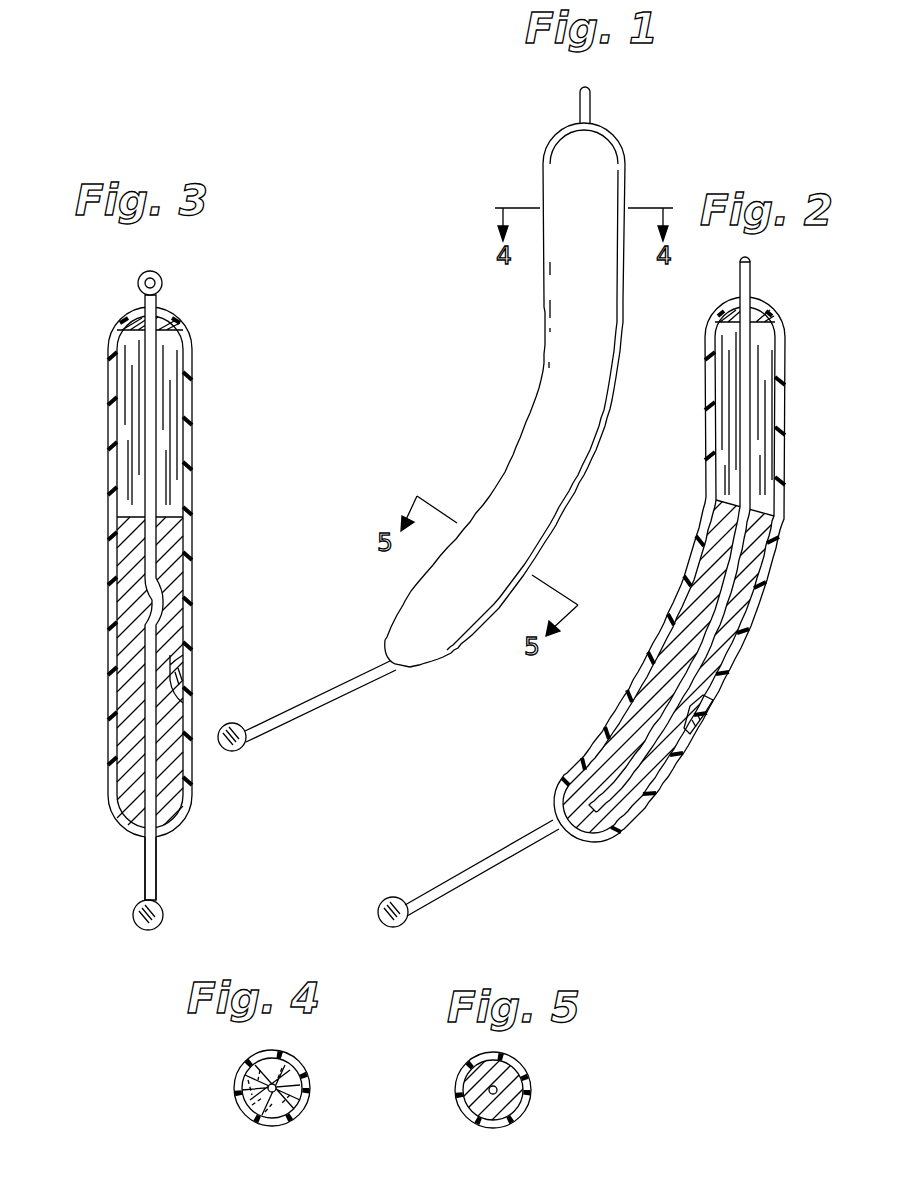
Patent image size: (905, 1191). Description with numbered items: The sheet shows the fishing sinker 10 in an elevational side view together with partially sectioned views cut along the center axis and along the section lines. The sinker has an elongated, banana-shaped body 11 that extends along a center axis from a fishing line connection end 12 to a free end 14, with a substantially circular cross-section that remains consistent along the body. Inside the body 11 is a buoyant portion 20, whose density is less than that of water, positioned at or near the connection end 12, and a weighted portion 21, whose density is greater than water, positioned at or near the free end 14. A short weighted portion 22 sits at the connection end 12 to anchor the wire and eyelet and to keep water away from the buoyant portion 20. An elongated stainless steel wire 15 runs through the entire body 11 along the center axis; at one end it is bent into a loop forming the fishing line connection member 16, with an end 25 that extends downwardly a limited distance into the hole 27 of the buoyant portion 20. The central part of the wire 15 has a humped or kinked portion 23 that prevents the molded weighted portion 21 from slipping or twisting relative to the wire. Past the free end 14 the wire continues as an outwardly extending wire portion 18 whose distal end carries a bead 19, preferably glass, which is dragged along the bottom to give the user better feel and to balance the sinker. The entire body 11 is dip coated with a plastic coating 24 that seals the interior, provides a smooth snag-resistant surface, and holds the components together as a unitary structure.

In FIG. 1, the fishing sinker 10 is at (446, 430).
In FIG. 1, the body 11 is at (588, 413).
In FIG. 1, the fishing line connection end 12 is at (603, 127).
In FIG. 3, the fishing line connection end 12 is at (128, 311).
In FIG. 2, the fishing line connection end 12 is at (770, 308).
In FIG. 1, the free end 14 is at (385, 641).
In FIG. 3, the free end 14 is at (118, 833).
In FIG. 2, the free end 14 is at (548, 812).
In FIG. 3, the wire 15 is at (158, 437).
In FIG. 2, the wire 15 is at (669, 537).
In FIG. 4, the wire 15 is at (283, 1088).
In FIG. 5, the wire 15 is at (497, 1092).
In FIG. 1, the fishing line connection member 16 is at (580, 97).
In FIG. 3, the fishing line connection member 16 is at (158, 277).
In FIG. 2, the fishing line connection member 16 is at (752, 270).
In FIG. 1, the wire portion 18 is at (340, 700).
In FIG. 3, the wire portion 18 is at (157, 876).
In FIG. 2, the wire portion 18 is at (488, 880).
In FIG. 1, the bead 19 is at (244, 745).
In FIG. 3, the bead 19 is at (134, 910).
In FIG. 2, the bead 19 is at (392, 896).
In FIG. 3, the buoyant portion 20 is at (133, 455).
In FIG. 2, the buoyant portion 20 is at (765, 490).
In FIG. 5, the buoyant portion 20 is at (470, 1095).
In FIG. 3, the weighted portion 21 is at (168, 562).
In FIG. 2, the weighted portion 21 is at (703, 610).
In FIG. 4, the weighted portion 21 is at (240, 1090).
In FIG. 3, the weighted portion 22 is at (185, 320).
In FIG. 2, the weighted portion 22 is at (714, 306).
In FIG. 3, the kinked portion 23 is at (158, 592).
In FIG. 3, the plastic coating 24 is at (186, 620).
In FIG. 2, the plastic coating 24 is at (728, 690).
In FIG. 4, the plastic coating 24 is at (292, 1056).
In FIG. 5, the plastic coating 24 is at (512, 1064).
In FIG. 3, the end 25 is at (155, 392).
In FIG. 2, the end 25 is at (745, 373).
In FIG. 3, the hole 27 is at (158, 462).
In FIG. 2, the hole 27 is at (748, 398).
In FIG. 4, the hole 27 is at (256, 1114).